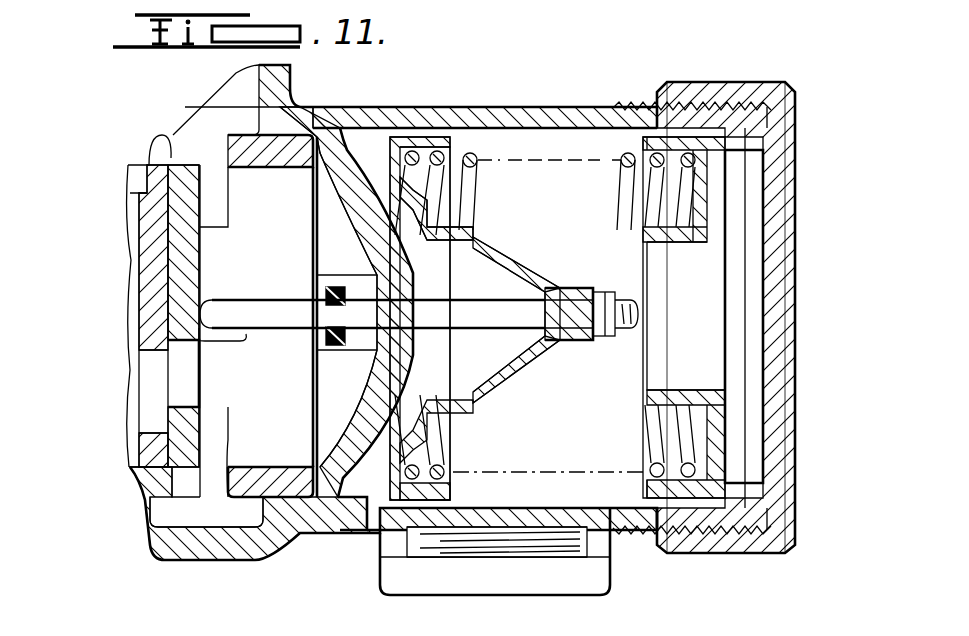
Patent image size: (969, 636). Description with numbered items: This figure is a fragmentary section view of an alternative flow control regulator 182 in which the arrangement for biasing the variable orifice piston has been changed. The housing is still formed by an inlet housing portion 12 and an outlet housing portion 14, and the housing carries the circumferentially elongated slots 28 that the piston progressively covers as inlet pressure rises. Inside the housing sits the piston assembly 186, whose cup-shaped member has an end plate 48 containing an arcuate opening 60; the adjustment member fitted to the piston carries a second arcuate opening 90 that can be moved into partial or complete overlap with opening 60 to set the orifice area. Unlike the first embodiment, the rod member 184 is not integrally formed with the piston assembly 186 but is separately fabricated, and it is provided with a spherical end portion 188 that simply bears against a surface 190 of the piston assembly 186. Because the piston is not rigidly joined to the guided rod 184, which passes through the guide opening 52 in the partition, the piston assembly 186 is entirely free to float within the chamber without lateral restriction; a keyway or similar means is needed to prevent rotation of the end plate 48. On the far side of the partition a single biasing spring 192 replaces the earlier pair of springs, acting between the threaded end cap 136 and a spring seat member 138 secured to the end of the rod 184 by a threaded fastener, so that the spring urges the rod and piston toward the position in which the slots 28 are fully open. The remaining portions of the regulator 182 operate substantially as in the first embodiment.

The inlet housing portion 12 is at (159, 148).
The outlet housing portion 14 is at (413, 107).
The circumferentially elongated slots 28 is at (225, 440).
The end plate 48 is at (182, 247).
The guide opening 52 is at (366, 312).
The opening 60 is at (186, 362).
The arcuate opening 90 is at (161, 380).
The threaded end cap 136 is at (777, 273).
The spring seat member 138 is at (497, 375).
The flow control regulator 182 is at (512, 85).
The rod member 184 is at (272, 305).
The piston assembly 186 is at (165, 227).
The spherical end portion 188 is at (246, 338).
The surface 190 is at (199, 397).
The single biasing spring 192 is at (478, 163).